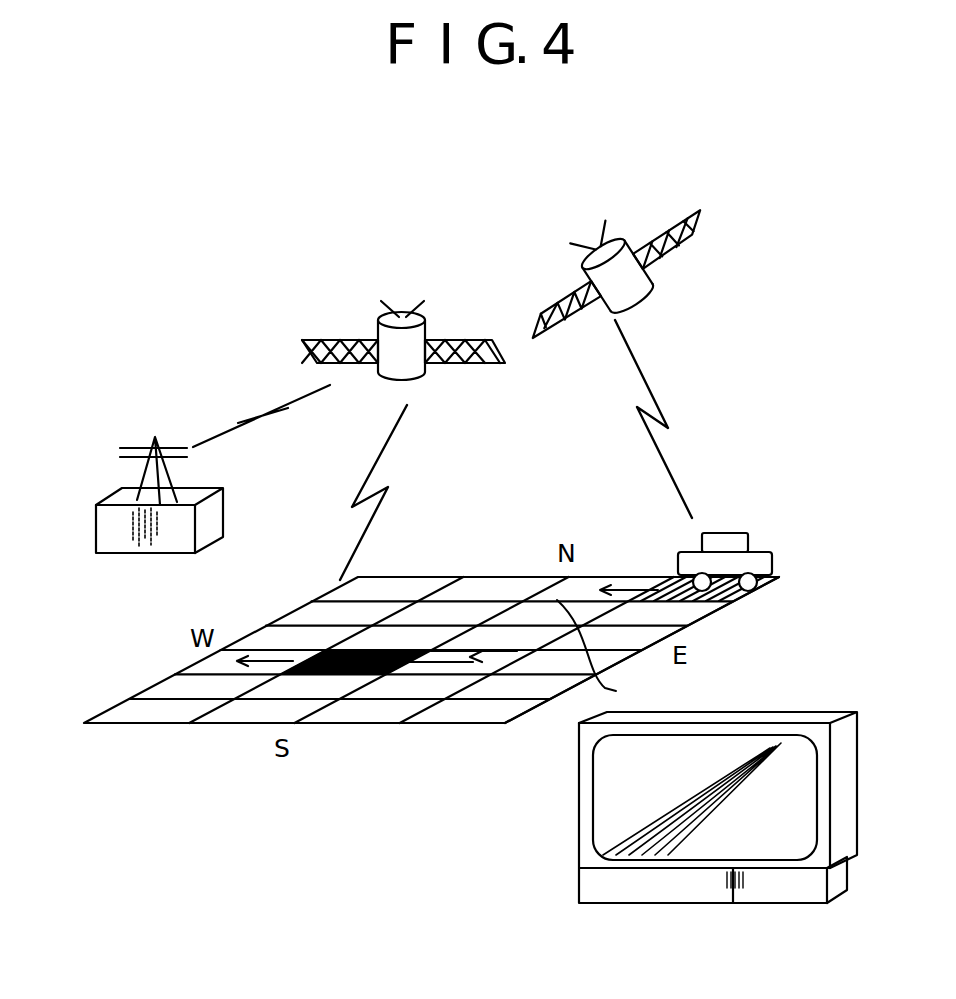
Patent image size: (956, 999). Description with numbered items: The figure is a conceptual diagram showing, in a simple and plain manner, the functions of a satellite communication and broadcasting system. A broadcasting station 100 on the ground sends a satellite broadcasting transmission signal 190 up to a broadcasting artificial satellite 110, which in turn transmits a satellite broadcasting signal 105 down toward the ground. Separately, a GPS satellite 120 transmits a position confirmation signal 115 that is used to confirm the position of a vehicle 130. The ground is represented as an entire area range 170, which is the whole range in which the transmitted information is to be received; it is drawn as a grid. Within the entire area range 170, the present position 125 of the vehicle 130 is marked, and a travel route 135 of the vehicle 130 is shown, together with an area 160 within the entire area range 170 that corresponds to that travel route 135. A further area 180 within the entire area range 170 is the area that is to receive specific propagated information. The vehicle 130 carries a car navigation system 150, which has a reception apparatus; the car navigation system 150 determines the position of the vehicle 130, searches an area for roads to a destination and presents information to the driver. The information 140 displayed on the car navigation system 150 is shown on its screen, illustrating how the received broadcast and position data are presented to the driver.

The broadcasting station 100 is at (155, 437).
The satellite broadcasting transmission signal 190 is at (268, 413).
The broadcasting artificial satellite 110 is at (404, 314).
The GPS satellite 120 is at (640, 268).
The satellite broadcasting signal 105 is at (350, 545).
The position confirmation signal 115 is at (636, 412).
The vehicle 130 is at (758, 548).
The area for the travel route 160 is at (623, 574).
The present position of the vehicle 125 is at (717, 604).
The travel route 135 is at (609, 651).
The entire area range 170 is at (133, 725).
The area to receive specific propagated information 180 is at (355, 670).
The information displayed on the car navigation system 140 is at (778, 743).
The car navigation system 150 is at (708, 895).